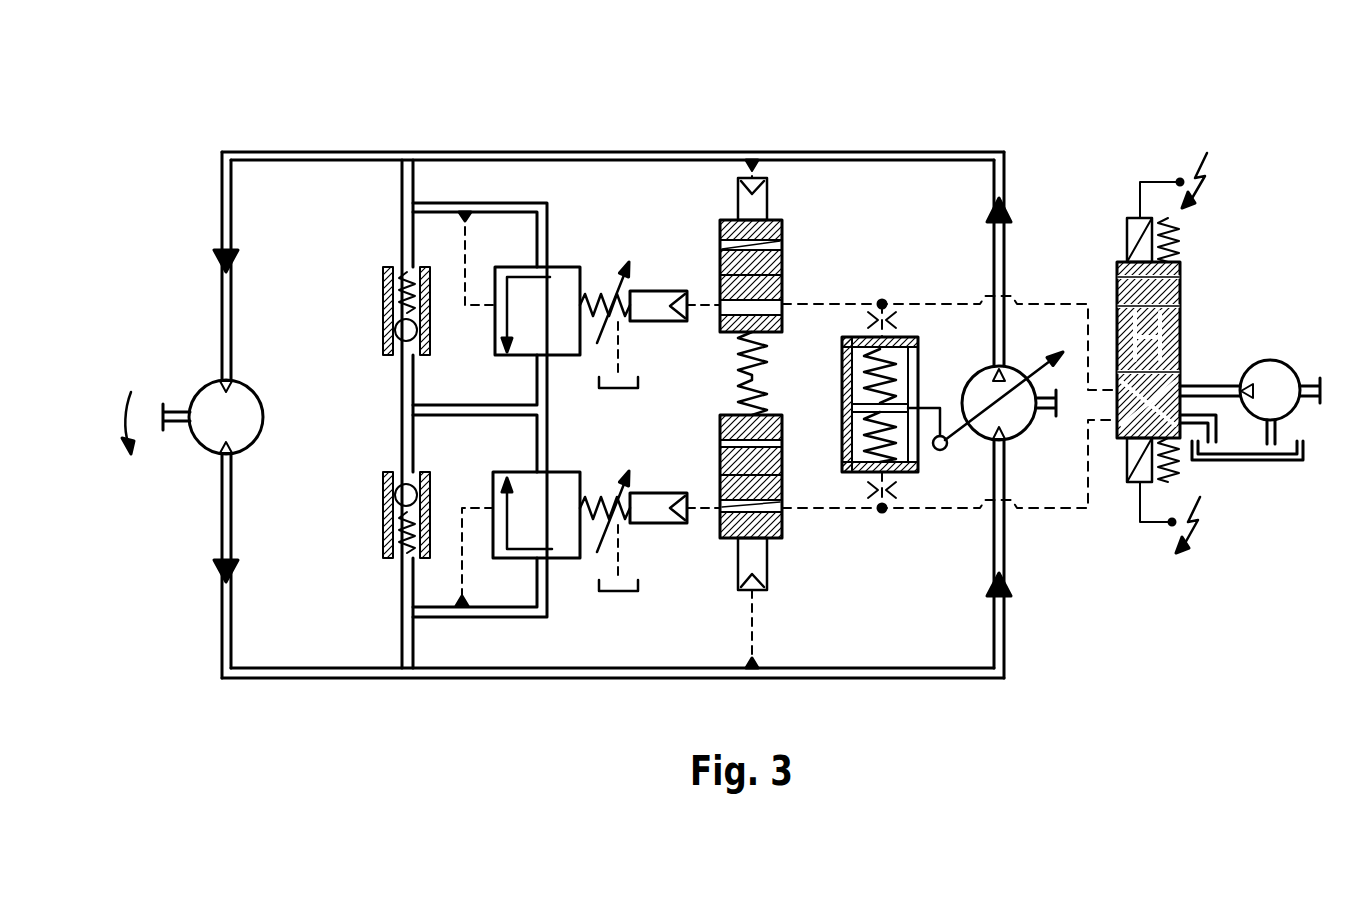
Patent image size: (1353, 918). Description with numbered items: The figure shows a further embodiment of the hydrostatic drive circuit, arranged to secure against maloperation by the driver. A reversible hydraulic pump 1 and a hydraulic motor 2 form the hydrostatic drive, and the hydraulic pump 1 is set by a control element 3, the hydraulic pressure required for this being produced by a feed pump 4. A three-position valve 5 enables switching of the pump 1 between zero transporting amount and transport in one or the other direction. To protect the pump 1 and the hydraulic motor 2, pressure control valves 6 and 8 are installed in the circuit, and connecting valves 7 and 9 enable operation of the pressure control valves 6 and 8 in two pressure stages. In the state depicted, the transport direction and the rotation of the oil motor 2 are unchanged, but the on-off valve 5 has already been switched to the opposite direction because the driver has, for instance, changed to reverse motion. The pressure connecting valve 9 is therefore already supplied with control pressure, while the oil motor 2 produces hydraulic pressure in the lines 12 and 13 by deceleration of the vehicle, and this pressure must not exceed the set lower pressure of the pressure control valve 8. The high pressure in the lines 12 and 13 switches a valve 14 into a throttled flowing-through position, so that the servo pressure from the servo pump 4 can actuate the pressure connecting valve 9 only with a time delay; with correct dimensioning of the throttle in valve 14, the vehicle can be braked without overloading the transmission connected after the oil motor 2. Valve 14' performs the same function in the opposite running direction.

The hydraulic pump 1 is at (1022, 410).
The hydraulic motor 2 is at (203, 432).
The control element 3 is at (898, 382).
The feed pump 4 is at (1288, 380).
The three-position valve 5 is at (1186, 292).
The pressure control valve 6 is at (565, 282).
The connecting valve 7 is at (655, 296).
The pressure control valve 8 is at (567, 540).
The pressure connecting valve 9 is at (655, 525).
The line 12 is at (226, 622).
The line 13 is at (1006, 635).
The valve 14 is at (802, 541).
The valve 14' is at (805, 287).